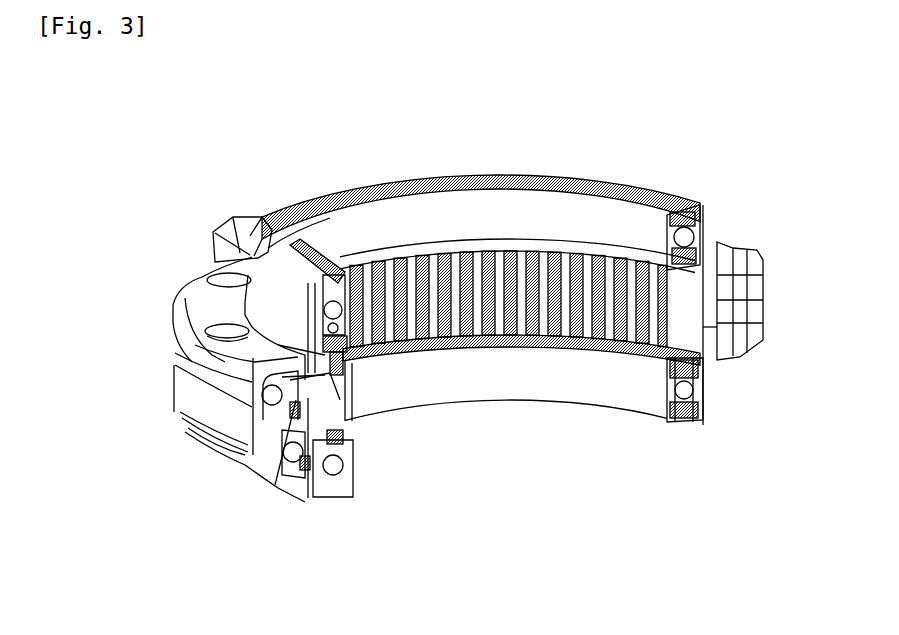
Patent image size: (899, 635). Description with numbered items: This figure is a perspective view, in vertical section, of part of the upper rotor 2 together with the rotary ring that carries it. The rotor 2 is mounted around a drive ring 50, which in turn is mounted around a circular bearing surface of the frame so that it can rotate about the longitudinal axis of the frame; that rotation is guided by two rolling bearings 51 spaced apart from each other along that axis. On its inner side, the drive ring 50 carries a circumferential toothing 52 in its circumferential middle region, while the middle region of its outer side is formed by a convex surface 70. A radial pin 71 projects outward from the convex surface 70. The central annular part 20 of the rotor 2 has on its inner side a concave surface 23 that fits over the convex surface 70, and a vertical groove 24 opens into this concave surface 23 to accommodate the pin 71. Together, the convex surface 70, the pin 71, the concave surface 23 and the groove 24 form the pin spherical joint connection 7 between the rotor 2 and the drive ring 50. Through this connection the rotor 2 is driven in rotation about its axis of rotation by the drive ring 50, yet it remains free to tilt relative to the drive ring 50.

The rotor 2 is at (227, 212).
The pin spherical joint connection 7 is at (313, 412).
The central annular part 20 is at (176, 393).
The concave surface 23 is at (717, 331).
The vertical groove 24 is at (250, 450).
The drive ring 50 is at (717, 403).
The rolling bearing 51 is at (632, 215).
The circumferential toothing 52 is at (565, 346).
The convex surface 70 is at (733, 268).
The radial pin 71 is at (275, 488).